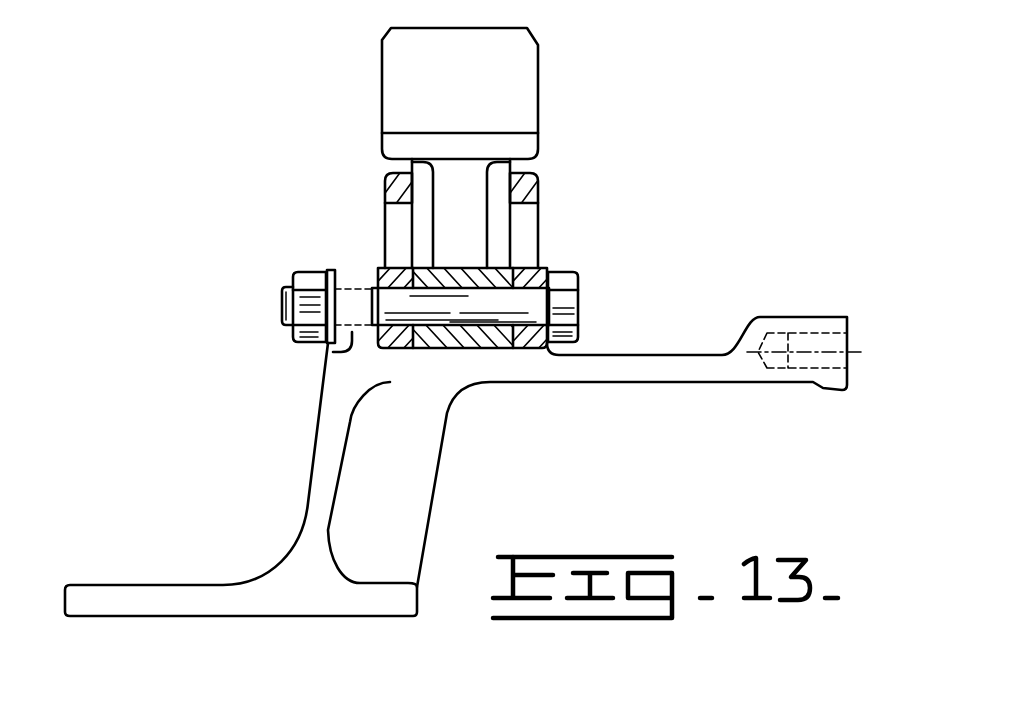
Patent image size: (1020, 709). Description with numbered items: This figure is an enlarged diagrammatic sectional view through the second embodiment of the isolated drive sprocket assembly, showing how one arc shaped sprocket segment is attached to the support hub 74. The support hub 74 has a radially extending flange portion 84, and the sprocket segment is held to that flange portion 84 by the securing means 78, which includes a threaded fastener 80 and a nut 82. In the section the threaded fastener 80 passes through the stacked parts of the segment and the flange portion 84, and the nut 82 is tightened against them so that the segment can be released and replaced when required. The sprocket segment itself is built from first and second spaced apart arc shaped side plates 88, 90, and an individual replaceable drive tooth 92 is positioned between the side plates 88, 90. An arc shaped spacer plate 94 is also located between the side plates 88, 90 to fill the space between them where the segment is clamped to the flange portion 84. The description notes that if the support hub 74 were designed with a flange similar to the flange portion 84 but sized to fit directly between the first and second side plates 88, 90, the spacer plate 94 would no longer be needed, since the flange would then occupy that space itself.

The support hub 74 is at (608, 375).
The means for releasably securing the sprocket segments 78 is at (562, 268).
The threaded fastener 80 is at (577, 304).
The nut 82 is at (304, 268).
The flange portion 84 is at (333, 352).
The first side plate 88 is at (538, 190).
The second side plate 90 is at (385, 188).
The drive tooth 92 is at (474, 97).
The spacer plate 94 is at (485, 350).